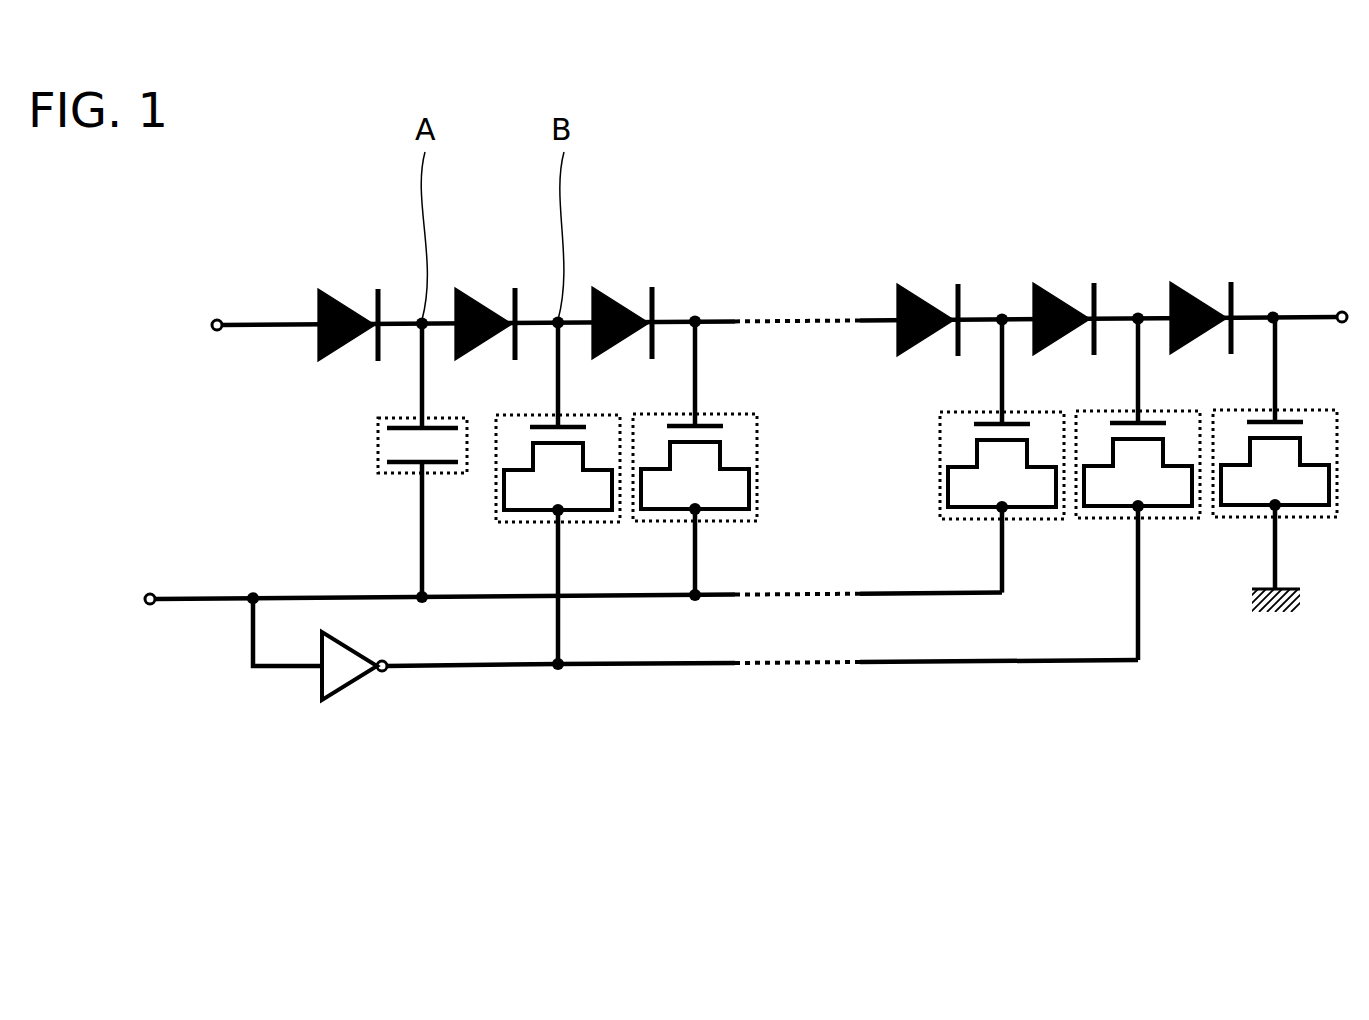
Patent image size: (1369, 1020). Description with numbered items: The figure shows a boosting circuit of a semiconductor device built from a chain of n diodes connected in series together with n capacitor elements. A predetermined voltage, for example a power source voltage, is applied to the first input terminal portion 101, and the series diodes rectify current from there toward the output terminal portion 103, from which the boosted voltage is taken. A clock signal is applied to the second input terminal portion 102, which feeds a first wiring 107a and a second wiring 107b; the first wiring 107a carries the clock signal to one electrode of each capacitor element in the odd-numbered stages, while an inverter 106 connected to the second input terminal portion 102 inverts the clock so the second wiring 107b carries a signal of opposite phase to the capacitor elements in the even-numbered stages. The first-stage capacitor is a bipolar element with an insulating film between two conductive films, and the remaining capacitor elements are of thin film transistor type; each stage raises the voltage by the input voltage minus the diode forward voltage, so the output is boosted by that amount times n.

The first input terminal portion 101 is at (217, 318).
The second input terminal portion 102 is at (150, 593).
The output terminal portion 103 is at (1342, 311).
The inverter 106 is at (346, 702).
The first wiring 107a is at (478, 600).
The second wiring 107b is at (609, 667).